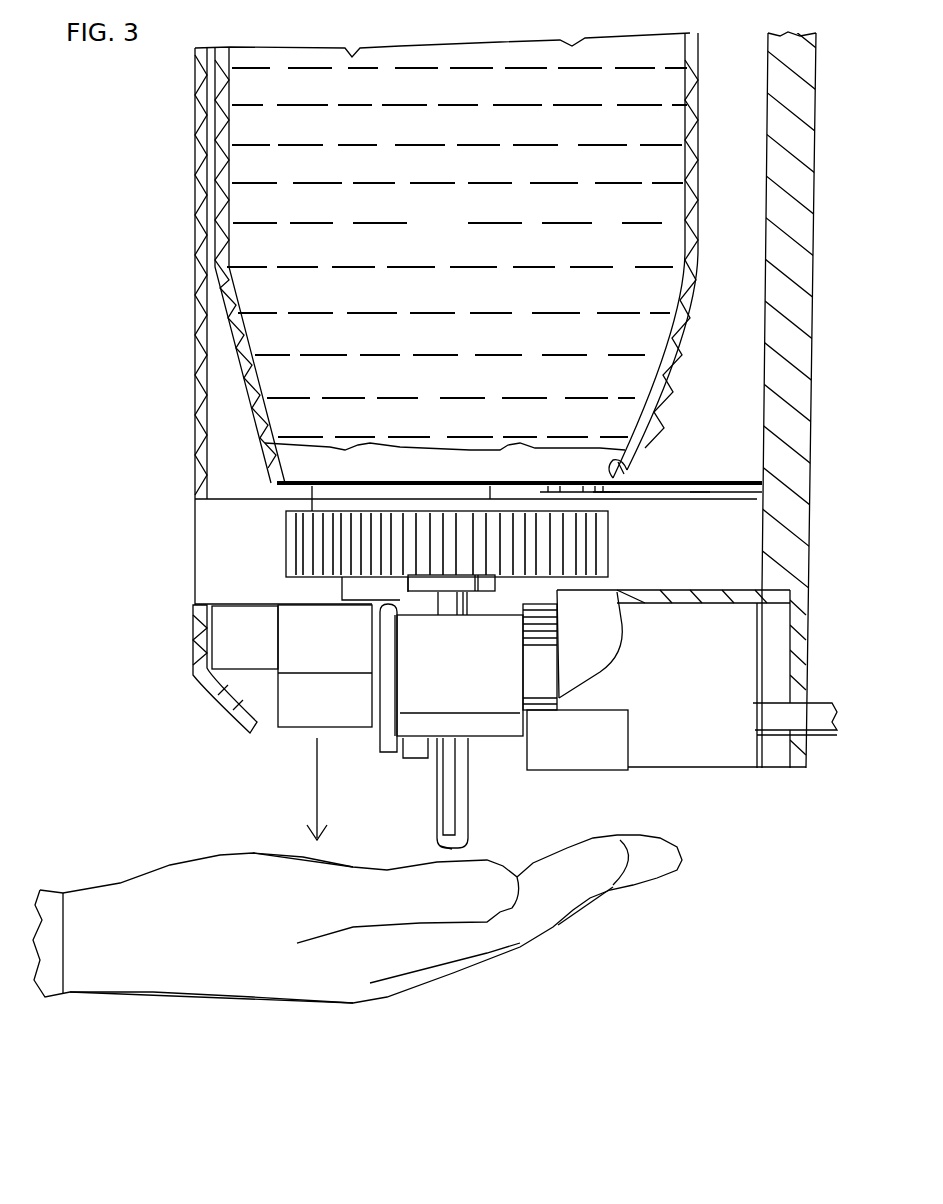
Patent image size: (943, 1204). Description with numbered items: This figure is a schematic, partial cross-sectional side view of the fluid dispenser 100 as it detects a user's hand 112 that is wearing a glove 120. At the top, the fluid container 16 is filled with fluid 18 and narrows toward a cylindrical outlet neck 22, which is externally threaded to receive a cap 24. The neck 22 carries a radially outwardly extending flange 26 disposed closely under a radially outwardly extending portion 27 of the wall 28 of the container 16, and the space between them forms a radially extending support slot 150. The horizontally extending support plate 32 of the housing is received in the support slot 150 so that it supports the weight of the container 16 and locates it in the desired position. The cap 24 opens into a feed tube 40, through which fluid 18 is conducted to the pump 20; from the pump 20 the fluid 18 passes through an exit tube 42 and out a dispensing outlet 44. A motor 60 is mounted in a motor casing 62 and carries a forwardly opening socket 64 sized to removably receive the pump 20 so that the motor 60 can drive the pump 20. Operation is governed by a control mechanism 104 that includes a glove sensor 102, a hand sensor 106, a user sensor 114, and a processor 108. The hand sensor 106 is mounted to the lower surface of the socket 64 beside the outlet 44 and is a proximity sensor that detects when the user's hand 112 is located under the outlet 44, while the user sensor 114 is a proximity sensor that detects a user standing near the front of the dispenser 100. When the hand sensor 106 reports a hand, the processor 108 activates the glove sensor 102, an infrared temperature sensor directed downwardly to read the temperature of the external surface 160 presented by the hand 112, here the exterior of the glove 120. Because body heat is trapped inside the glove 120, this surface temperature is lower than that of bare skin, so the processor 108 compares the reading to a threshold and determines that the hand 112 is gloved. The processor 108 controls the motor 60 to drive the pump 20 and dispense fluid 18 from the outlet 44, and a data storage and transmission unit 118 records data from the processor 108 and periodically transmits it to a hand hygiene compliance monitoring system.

The fluid dispenser 100 is at (125, 225).
The fluid container 16 is at (248, 383).
The fluid 18 is at (453, 237).
The wall 28 is at (660, 372).
The outlet neck 22 is at (548, 483).
The radially outwardly extending portion 27 is at (627, 467).
The support slot 150 is at (627, 482).
The flange 26 is at (610, 500).
The support plate 32 is at (697, 490).
The cap 24 is at (612, 562).
The pump 20 is at (375, 588).
The feed tube 40 is at (467, 614).
The user sensor 114 is at (192, 586).
The processor 108 is at (263, 655).
The glove sensor 102 is at (340, 717).
The hand sensor 106 is at (410, 758).
The socket 64 is at (482, 680).
The motor 60 is at (695, 690).
The motor casing 62 is at (720, 592).
The data storage and transmission unit 118 is at (595, 757).
The exit tube 42 is at (440, 790).
The dispensing outlet 44 is at (438, 851).
The control mechanism 104 is at (256, 771).
The glove 120 is at (197, 873).
The external surface 160 is at (297, 857).
The user's hand 112 is at (300, 972).